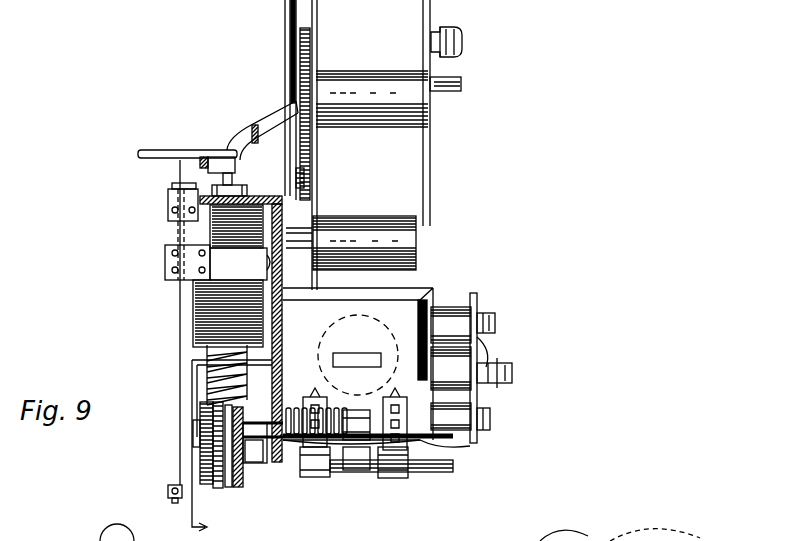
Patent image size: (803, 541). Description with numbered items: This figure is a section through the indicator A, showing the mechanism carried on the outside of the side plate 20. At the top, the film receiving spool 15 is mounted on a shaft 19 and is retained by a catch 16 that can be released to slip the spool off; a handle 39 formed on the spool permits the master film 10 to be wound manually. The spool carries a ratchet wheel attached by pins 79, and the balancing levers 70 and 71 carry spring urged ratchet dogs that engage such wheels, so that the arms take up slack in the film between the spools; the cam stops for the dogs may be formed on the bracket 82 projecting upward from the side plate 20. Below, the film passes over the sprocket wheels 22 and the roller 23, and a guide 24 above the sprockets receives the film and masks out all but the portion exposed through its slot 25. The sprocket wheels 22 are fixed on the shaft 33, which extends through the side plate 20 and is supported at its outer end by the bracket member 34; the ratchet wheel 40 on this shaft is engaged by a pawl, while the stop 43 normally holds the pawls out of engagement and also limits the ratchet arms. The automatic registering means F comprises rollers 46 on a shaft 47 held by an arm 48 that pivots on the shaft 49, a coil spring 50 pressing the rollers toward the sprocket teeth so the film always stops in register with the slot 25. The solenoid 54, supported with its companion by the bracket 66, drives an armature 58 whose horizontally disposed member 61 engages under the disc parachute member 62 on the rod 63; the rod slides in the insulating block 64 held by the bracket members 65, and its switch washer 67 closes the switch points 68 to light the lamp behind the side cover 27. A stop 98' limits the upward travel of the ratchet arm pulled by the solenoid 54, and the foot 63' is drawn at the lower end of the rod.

The bracket 82 is at (288, 46).
The pins 79 is at (303, 150).
The bracket 66 is at (310, 174).
The film receiving spool 15 is at (405, 98).
The catch 16 is at (440, 66).
The handle 39 is at (462, 84).
The indicator A is at (443, 157).
The lever 70 is at (270, 124).
The lever 71 is at (240, 128).
The disc parachute member 62 is at (168, 150).
The horizontally disposed member 61 is at (217, 160).
The armature 58 is at (240, 172).
The side plate 20 is at (264, 196).
The solenoid 54 is at (265, 222).
The switch washer 67 is at (177, 184).
The switch points 68 is at (167, 193).
The insulating block 64 is at (166, 238).
The bracket members 65 is at (192, 265).
The rod 63 is at (191, 322).
The foot 63' is at (154, 493).
The roller 23 is at (410, 247).
The guide 24 is at (417, 300).
The slot 25 is at (362, 358).
The coil spring 50 is at (268, 394).
The master film 10 is at (198, 380).
The bracket member 34 is at (198, 408).
The ratchet wheel 40 is at (195, 442).
The stop 43 is at (255, 466).
The shaft 33 is at (252, 423).
The shaft 19 is at (196, 489).
The arm 48 is at (335, 466).
The shaft 47 is at (363, 468).
The shaft 49 is at (340, 418).
The sprocket wheels 22 is at (307, 438).
The rollers 46 is at (315, 478).
The automatic registering means F is at (343, 466).
The side cover 27 is at (420, 438).
The stop 98' is at (481, 525).